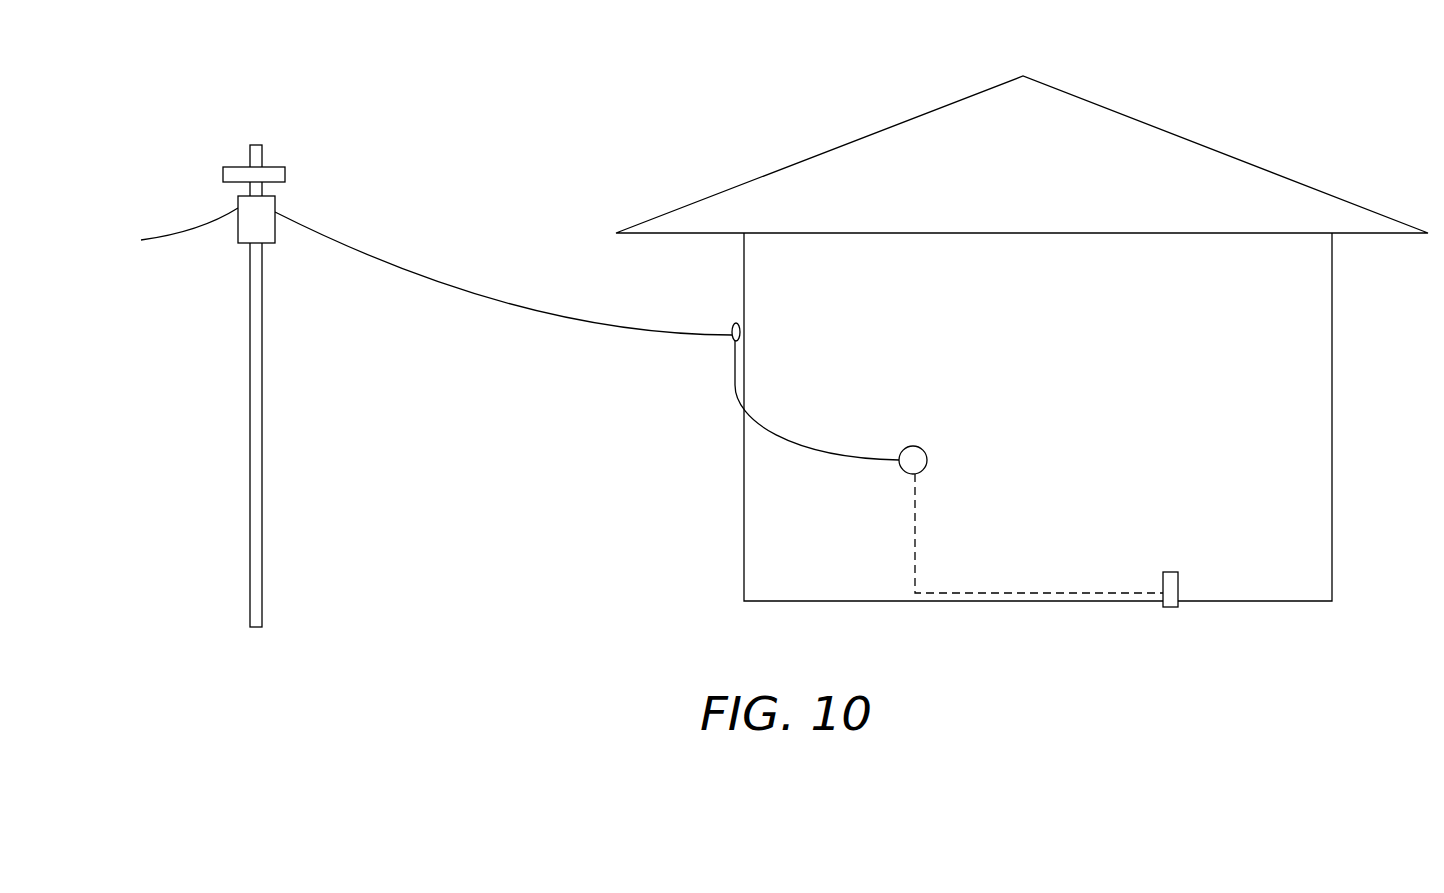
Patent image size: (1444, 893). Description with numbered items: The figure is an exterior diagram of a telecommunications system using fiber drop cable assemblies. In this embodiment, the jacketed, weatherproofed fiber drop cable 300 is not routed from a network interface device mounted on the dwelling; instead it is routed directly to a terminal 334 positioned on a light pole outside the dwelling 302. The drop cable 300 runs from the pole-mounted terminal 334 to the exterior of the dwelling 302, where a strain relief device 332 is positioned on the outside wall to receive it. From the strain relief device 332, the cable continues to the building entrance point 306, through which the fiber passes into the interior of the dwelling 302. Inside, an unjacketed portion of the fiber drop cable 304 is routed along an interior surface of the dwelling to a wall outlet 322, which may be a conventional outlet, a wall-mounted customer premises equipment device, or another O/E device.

The fiber drop cable 300 is at (787, 443).
The dwelling 302 is at (757, 569).
The unjacketed portion of the fiber drop cable 304 is at (915, 540).
The entrance point 306 is at (925, 448).
The wall outlet 322 is at (1180, 578).
The strain relief device 332 is at (730, 328).
The terminal 334 is at (275, 203).